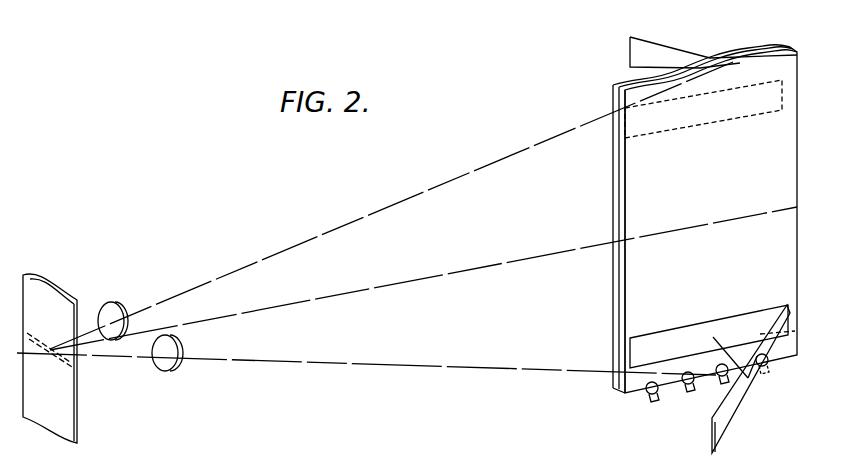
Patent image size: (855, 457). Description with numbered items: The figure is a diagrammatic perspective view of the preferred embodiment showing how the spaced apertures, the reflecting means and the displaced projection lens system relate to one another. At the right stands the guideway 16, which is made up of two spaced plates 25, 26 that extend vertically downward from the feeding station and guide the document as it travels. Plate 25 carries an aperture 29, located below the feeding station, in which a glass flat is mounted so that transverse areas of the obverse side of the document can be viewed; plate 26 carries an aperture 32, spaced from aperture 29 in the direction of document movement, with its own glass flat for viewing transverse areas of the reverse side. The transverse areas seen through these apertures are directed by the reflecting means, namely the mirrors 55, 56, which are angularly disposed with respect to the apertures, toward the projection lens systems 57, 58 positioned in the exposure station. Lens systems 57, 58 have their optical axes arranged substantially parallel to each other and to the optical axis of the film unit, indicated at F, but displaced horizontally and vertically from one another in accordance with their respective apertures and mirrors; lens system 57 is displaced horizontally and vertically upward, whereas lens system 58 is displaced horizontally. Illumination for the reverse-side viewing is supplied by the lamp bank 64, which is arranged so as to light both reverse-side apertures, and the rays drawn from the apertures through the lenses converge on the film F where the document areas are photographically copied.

The film F is at (54, 297).
The projection lens system 57 is at (114, 303).
The projection lens system 58 is at (173, 370).
The guideway 16 is at (616, 210).
The plate 25 is at (617, 152).
The plate 26 is at (633, 288).
The mirror 55 is at (677, 52).
The aperture 29 is at (660, 133).
The aperture 32 is at (700, 323).
The mirror 56 is at (732, 412).
The lamp bank 64 is at (648, 398).